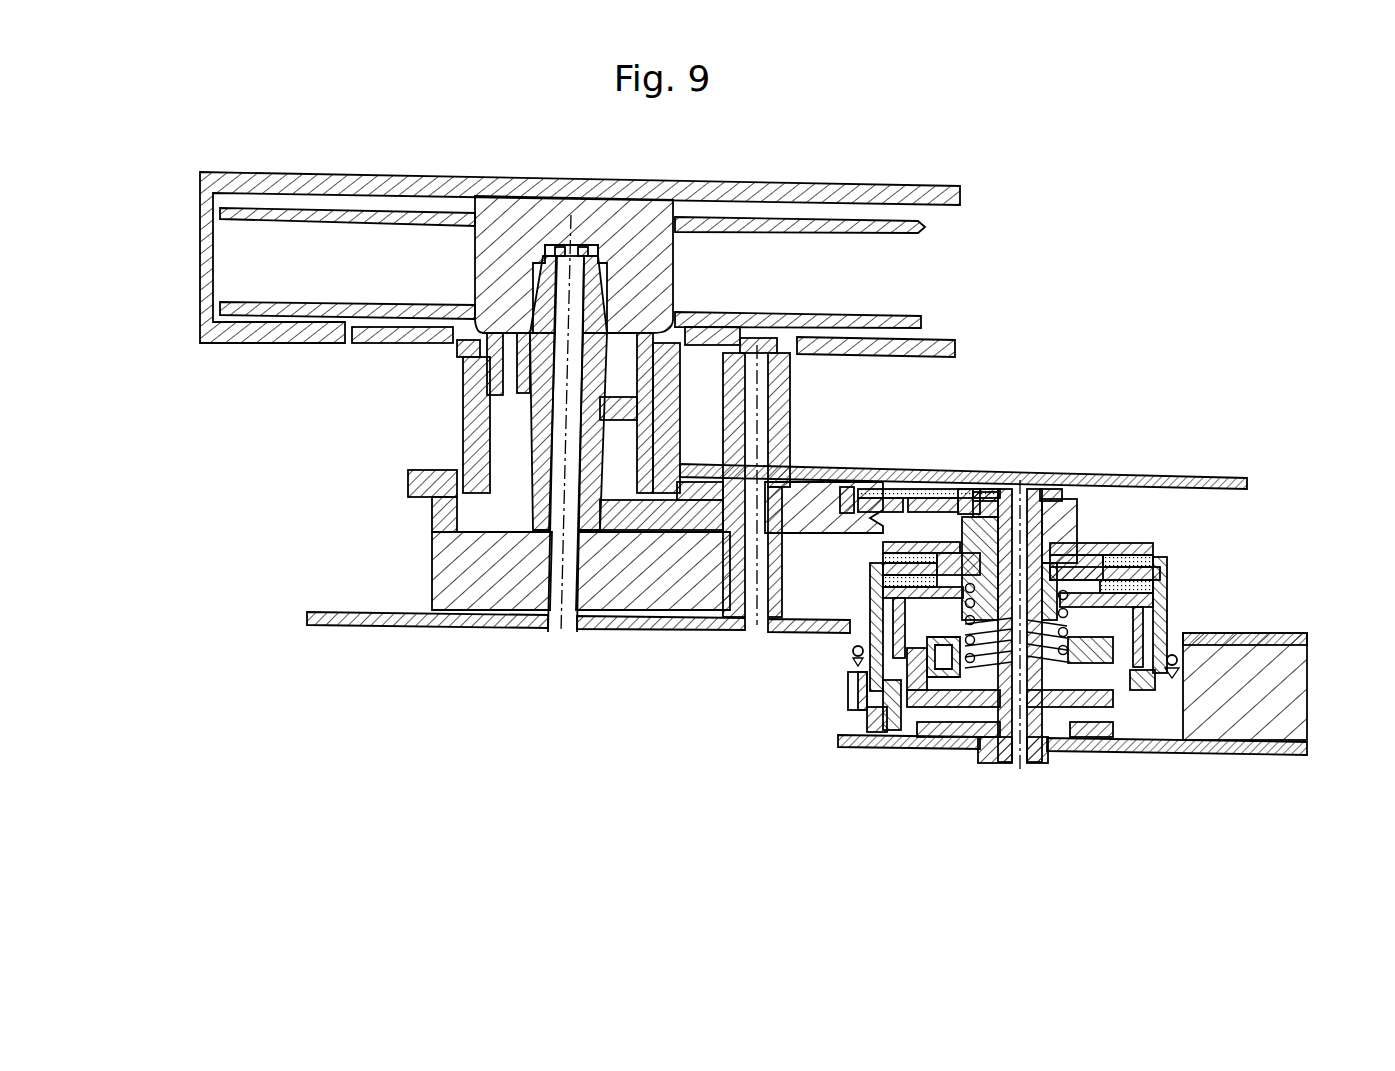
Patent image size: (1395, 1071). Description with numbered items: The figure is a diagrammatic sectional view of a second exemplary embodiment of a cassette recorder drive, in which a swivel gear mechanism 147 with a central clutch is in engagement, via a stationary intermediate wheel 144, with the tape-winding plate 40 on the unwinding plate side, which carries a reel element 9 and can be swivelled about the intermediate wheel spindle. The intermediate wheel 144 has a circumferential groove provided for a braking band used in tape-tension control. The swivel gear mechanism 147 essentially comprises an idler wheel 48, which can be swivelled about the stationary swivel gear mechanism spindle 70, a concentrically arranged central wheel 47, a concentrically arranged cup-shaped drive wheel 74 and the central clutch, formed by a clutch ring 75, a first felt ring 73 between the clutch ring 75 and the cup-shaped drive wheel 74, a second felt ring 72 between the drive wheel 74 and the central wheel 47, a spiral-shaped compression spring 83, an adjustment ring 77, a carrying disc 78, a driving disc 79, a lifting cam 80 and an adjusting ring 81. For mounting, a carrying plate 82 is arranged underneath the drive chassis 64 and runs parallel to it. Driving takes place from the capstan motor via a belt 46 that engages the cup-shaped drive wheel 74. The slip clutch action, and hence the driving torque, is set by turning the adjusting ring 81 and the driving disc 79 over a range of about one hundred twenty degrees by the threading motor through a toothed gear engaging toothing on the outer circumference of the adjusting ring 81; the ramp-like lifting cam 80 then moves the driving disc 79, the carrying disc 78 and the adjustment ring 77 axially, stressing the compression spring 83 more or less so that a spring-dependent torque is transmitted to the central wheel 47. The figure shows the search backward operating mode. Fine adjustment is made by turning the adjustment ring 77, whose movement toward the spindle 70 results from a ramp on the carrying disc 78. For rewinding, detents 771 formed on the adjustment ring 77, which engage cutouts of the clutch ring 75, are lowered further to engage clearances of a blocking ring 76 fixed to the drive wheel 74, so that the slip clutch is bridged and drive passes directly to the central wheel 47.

The reel element 9 is at (673, 282).
The tape-winding plate 40 is at (465, 410).
The intermediate wheel 144 is at (787, 493).
The swivel gear mechanism 147 is at (1022, 440).
The idler wheel 48 is at (855, 493).
The central wheel 47 is at (1073, 518).
The second felt ring 72 is at (1112, 560).
The cup-shaped drive wheel 74 is at (1162, 573).
The first felt ring 73 is at (1145, 588).
The clutch ring 75 is at (895, 612).
The detents 771 is at (1128, 655).
The belt 46 is at (852, 651).
The drive chassis 64 is at (1280, 642).
The carrying disc 78 is at (923, 680).
The blocking ring 76 is at (1147, 680).
The adjusting ring 81 is at (867, 708).
The carrying plate 82 is at (1302, 753).
The lifting cam 80 is at (917, 738).
The swivel gear mechanism spindle 70 is at (1013, 765).
The compression spring 83 is at (1043, 650).
The driving disc 79 is at (1078, 662).
The adjustment ring 77 is at (1143, 663).